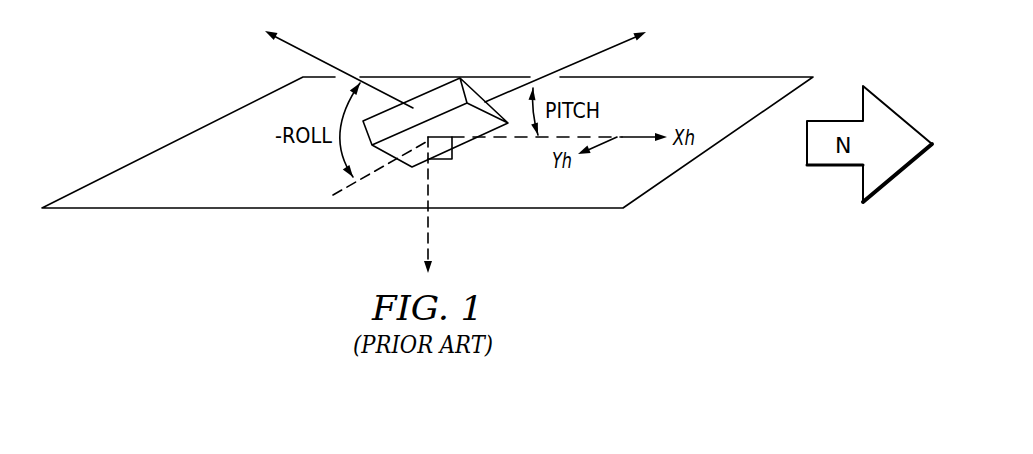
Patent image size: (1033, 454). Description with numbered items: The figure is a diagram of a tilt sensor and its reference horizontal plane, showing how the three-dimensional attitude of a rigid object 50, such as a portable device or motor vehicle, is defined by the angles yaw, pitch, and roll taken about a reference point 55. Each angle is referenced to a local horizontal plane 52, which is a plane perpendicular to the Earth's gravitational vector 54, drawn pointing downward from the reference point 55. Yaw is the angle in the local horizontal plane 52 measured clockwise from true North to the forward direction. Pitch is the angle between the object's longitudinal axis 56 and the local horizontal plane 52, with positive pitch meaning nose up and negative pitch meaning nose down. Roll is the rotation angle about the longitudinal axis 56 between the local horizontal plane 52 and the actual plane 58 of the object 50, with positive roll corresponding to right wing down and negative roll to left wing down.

The rigid object 50 is at (413, 86).
The local horizontal plane 52 is at (167, 150).
The Earth's gravitational vector 54 is at (427, 240).
The reference point 55 is at (426, 142).
The longitudinal axis 56 is at (610, 46).
The actual plane 58 is at (308, 52).